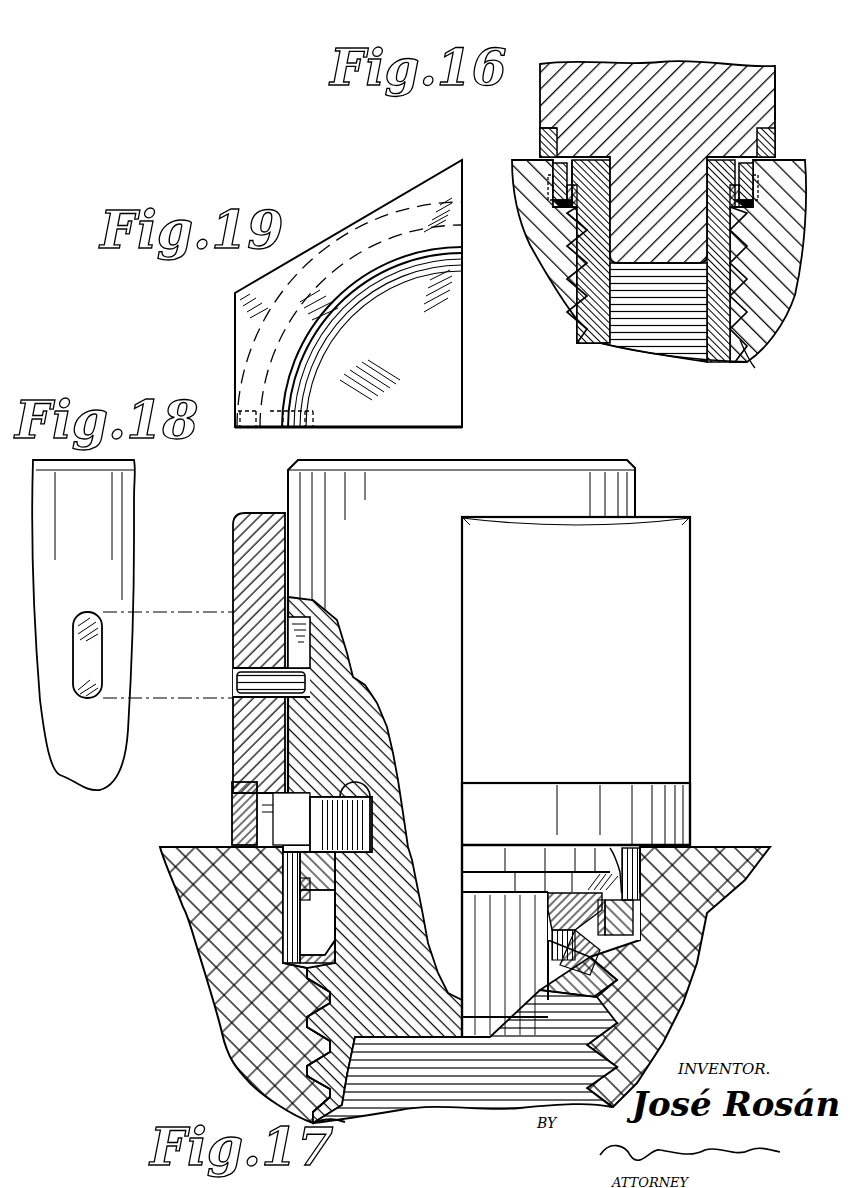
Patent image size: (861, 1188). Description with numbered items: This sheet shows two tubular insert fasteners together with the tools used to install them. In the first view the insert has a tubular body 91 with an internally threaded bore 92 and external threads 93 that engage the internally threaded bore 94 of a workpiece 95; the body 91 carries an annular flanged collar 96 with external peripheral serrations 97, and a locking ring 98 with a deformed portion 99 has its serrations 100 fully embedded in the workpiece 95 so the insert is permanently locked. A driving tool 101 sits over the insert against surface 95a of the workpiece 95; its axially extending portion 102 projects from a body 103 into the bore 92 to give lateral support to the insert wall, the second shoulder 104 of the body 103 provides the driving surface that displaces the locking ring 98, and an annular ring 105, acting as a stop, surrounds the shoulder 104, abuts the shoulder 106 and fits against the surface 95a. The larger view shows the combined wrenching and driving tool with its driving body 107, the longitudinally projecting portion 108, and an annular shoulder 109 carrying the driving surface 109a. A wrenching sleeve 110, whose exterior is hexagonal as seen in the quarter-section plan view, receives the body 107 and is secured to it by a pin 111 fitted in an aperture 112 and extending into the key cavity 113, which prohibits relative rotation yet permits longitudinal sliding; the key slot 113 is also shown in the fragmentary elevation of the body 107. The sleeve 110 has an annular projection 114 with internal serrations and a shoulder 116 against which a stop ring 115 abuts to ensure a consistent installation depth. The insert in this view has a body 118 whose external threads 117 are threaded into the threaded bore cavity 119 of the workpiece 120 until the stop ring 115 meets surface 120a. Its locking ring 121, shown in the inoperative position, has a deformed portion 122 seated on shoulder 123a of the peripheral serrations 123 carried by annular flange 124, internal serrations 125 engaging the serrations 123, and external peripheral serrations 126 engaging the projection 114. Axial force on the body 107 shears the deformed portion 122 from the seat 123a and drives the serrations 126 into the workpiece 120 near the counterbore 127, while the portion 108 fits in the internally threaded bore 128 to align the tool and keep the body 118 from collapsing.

In FIG. 16, the tubular body 91 is at (570, 332).
In FIG. 16, the internally threaded bore 92 is at (660, 330).
In FIG. 16, the external threads 93 is at (578, 288).
In FIG. 16, the internally threaded bore 94 is at (740, 340).
In FIG. 16, the workpiece 95 is at (783, 290).
In FIG. 16, the surface 95a is at (780, 160).
In FIG. 16, the annular flanged collar 96 is at (586, 214).
In FIG. 16, the external peripheral serrations 97 is at (550, 165).
In FIG. 16, the locking ring 98 is at (555, 205).
In FIG. 16, the deformed portion 99 is at (566, 214).
In FIG. 16, the serrations 100 is at (546, 183).
In FIG. 16, the driving tool 101 is at (677, 62).
In FIG. 16, the axially extending portion 102 is at (672, 210).
In FIG. 16, the body 103 is at (617, 72).
In FIG. 16, the second shoulder 104 is at (776, 86).
In FIG. 16, the annular ring 105 is at (543, 135).
In FIG. 16, the shoulder 106 is at (543, 130).
In FIG. 19, the body 107 is at (425, 395).
In FIG. 18, the body 107 is at (97, 498).
In FIG. 17, the body 107 is at (560, 462).
In FIG. 17, the portion 108 is at (303, 1055).
In FIG. 17, the annular shoulder 109 is at (285, 742).
In FIG. 17, the driving surface 109a is at (282, 768).
In FIG. 19, the wrenching sleeve 110 is at (236, 322).
In FIG. 17, the wrenching sleeve 110 is at (266, 518).
In FIG. 19, the pin 111 is at (262, 412).
In FIG. 17, the pin 111 is at (250, 678).
In FIG. 17, the aperture 112 is at (296, 640).
In FIG. 19, the key cavity 113 is at (312, 414).
In FIG. 18, the key cavity 113 is at (84, 652).
In FIG. 17, the key cavity 113 is at (267, 663).
In FIG. 17, the annular projection 114 is at (265, 800).
In FIG. 19, the stop ring 115 is at (340, 238).
In FIG. 17, the stop ring 115 is at (262, 812).
In FIG. 17, the shoulder 116 is at (242, 790).
In FIG. 17, the external threads 117 is at (612, 1000).
In FIG. 17, the body 118 is at (335, 1125).
In FIG. 17, the threaded bore cavity 119 is at (318, 1058).
In FIG. 17, the workpiece 120 is at (228, 1030).
In FIG. 17, the surface 120a is at (690, 846).
In FIG. 17, the locking ring 121 is at (305, 920).
In FIG. 17, the deformed portion 122 is at (318, 930).
In FIG. 17, the peripheral serrations 123 is at (300, 978).
In FIG. 17, the shoulder 123a is at (320, 953).
In FIG. 17, the annular flange 124 is at (320, 1010).
In FIG. 17, the internal serrations 125 is at (290, 880).
In FIG. 17, the external peripheral serrations 126 is at (322, 828).
In FIG. 17, the counterbore 127 is at (630, 966).
In FIG. 17, the internally threaded bore 128 is at (388, 1098).